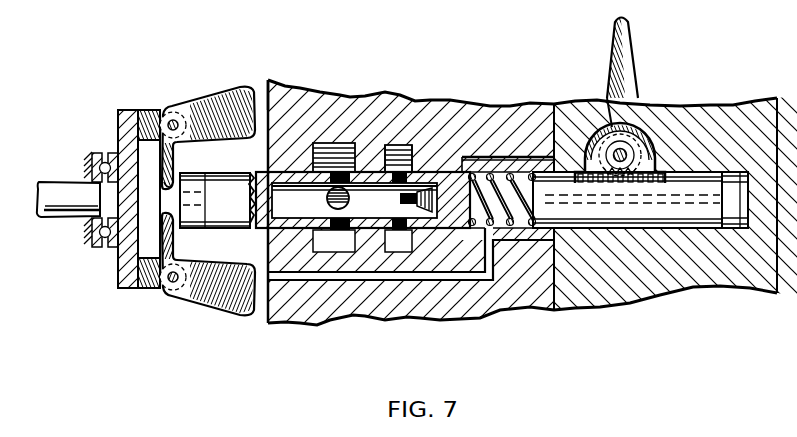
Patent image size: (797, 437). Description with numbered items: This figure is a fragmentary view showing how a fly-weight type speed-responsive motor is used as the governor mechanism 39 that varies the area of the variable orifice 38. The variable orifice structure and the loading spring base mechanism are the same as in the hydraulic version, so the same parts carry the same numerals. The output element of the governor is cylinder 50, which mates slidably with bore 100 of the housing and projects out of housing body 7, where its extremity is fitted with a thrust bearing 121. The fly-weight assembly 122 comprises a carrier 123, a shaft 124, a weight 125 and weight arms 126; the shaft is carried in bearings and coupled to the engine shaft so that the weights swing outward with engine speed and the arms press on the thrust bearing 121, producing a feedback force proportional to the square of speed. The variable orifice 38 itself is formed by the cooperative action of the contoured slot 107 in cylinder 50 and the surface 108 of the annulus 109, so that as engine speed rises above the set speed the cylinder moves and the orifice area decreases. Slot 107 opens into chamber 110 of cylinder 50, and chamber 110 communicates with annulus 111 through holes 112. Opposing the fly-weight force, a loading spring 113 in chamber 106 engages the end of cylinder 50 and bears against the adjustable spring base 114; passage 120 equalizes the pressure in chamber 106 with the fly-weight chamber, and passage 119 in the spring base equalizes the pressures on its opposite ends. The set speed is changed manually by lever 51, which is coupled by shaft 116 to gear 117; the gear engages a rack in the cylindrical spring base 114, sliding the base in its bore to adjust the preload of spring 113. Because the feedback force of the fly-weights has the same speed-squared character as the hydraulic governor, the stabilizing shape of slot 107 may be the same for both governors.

The housing body 7 is at (436, 323).
The variable orifice 38 is at (338, 209).
The governor mechanism 39 is at (260, 82).
The cylinder 50 is at (222, 185).
The lever 51 is at (634, 47).
The bore 100 is at (283, 160).
The chamber 106 is at (508, 162).
The contoured slot 107 is at (443, 229).
The surface 108 is at (405, 170).
The annulus 109 is at (397, 160).
The chamber 110 is at (264, 253).
The annulus 111 is at (338, 160).
The holes 112 is at (348, 279).
The loading spring 113 is at (508, 221).
The adjustable spring base 114 is at (680, 212).
The shaft 116 is at (625, 148).
The gear 117 is at (653, 157).
The passage 119 is at (631, 200).
The passage 120 is at (408, 212).
The thrust bearing 121 is at (200, 230).
The fly-weight assembly 122 is at (157, 290).
The carrier 123 is at (118, 263).
The shaft 124 is at (65, 190).
The weight 125 is at (182, 103).
The weight arms 126 is at (173, 162).